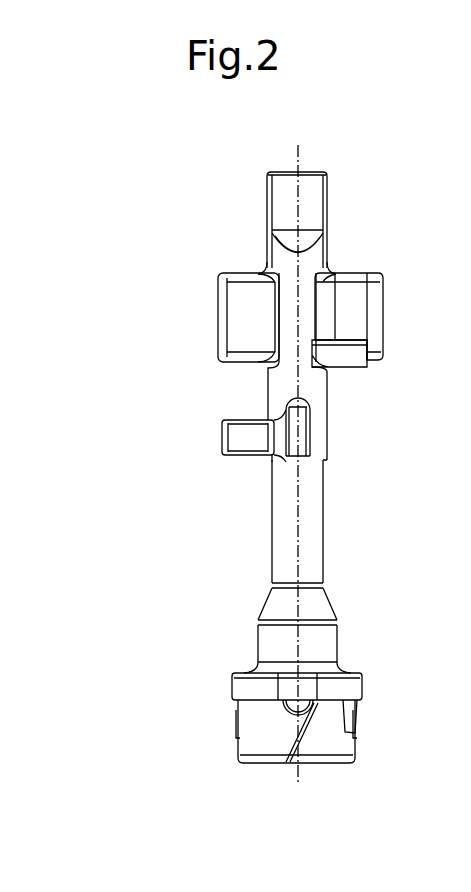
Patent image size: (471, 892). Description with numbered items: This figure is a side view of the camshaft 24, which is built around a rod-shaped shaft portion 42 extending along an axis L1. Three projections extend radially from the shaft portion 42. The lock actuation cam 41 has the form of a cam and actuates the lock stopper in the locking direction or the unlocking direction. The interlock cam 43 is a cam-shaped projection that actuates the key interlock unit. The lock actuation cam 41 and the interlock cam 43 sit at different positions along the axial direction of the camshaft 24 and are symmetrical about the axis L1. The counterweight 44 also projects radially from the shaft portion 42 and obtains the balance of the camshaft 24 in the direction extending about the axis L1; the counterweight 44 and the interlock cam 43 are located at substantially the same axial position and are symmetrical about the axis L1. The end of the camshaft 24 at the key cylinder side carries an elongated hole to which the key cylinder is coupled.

The axis L1 is at (298, 158).
The camshaft 24 is at (298, 467).
The lock actuation cam 41 is at (222, 449).
The shaft portion 42 is at (324, 523).
The interlock cam 43 is at (383, 291).
The counterweight 44 is at (218, 291).